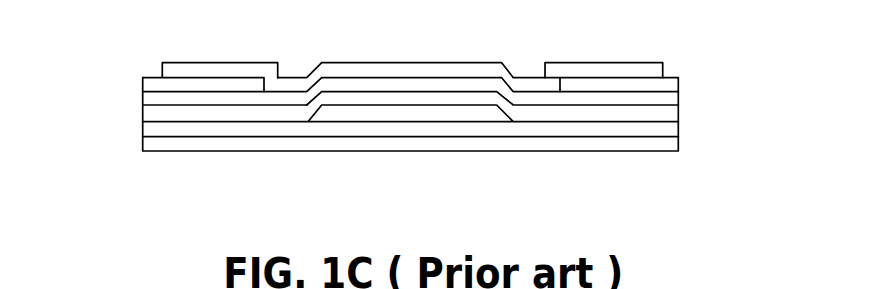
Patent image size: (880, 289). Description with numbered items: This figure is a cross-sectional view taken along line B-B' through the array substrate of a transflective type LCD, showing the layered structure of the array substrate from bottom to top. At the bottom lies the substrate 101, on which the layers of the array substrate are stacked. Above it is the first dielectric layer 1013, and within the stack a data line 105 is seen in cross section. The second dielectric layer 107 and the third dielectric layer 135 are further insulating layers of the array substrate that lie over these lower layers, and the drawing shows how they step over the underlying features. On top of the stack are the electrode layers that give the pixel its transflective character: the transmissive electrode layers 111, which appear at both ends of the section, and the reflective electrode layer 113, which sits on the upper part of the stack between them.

The substrate 101 is at (607, 143).
The first dielectric layer 1013 is at (145, 127).
The data lines 105 is at (402, 110).
The third dielectric layer 135 is at (158, 99).
The second dielectric layer 107 is at (442, 97).
The reflective electrode layers 113 is at (587, 68).
The transmissive electrode layers 111 is at (160, 87).